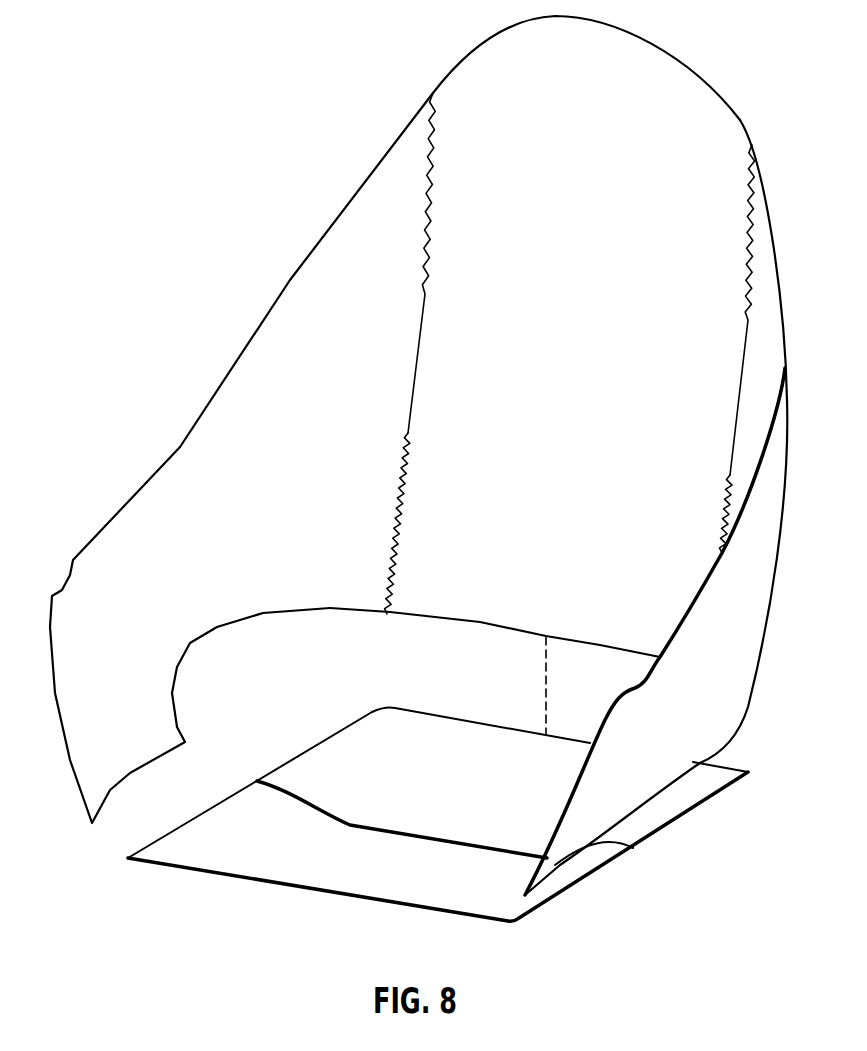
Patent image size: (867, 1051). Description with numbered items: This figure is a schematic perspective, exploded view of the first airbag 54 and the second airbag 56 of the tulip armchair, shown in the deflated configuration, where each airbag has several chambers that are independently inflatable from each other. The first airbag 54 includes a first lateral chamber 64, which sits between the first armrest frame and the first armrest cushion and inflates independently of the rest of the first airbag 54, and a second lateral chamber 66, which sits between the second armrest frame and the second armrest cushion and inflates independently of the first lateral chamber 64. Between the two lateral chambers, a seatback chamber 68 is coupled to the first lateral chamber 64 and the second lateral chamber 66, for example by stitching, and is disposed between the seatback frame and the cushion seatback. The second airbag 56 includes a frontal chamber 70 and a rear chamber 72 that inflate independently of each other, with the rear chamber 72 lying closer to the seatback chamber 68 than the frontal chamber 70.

The first airbag 54 is at (684, 53).
The second airbag 56 is at (229, 879).
The first lateral chamber 64 is at (247, 363).
The second lateral chamber 66 is at (748, 652).
The seatback chamber 68 is at (665, 195).
The frontal chamber 70 is at (460, 897).
The rear chamber 72 is at (368, 752).